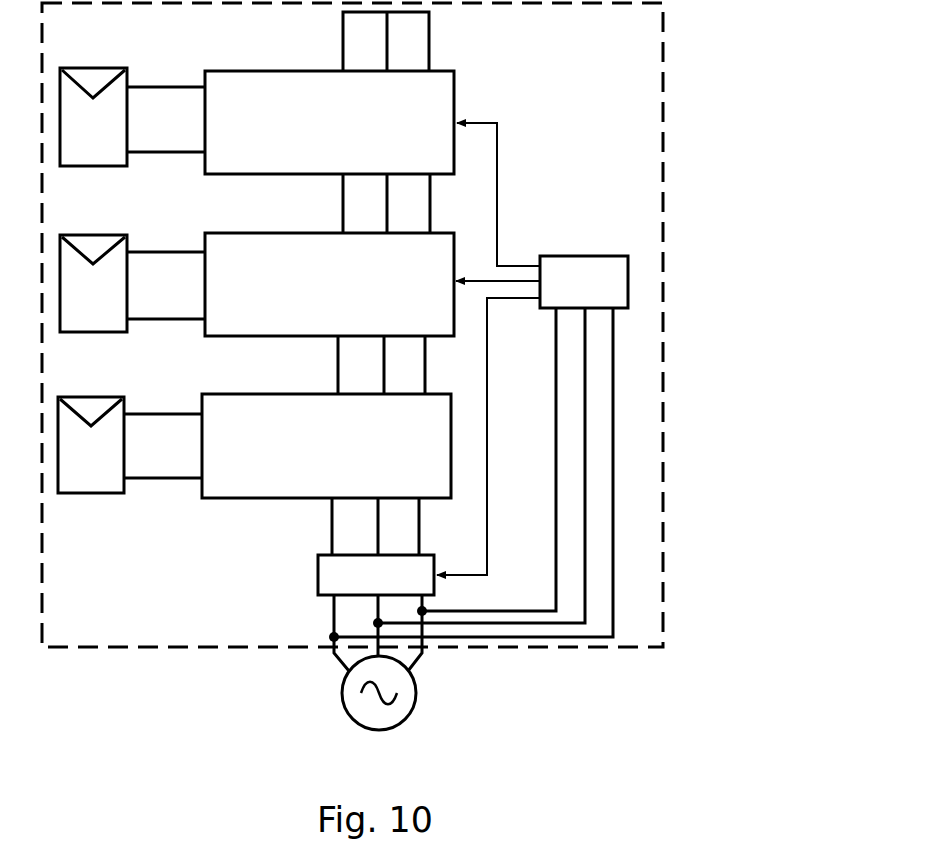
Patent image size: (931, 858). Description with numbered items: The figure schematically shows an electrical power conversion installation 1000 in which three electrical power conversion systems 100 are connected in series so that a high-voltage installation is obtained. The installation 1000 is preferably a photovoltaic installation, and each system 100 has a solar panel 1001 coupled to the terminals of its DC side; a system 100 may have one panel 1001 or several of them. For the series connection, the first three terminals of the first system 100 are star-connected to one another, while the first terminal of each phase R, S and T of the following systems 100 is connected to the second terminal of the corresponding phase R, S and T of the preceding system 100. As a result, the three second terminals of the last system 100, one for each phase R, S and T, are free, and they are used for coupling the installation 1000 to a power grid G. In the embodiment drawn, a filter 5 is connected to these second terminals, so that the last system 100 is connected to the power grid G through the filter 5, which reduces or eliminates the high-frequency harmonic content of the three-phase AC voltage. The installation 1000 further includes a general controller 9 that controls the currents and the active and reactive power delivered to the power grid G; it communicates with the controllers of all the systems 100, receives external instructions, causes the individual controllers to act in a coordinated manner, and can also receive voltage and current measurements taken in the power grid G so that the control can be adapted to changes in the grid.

The electrical power conversion installation 1000 is at (665, 141).
The solar panel 1001 is at (88, 140).
The electrical power conversion system 100 is at (372, 132).
The general controller 9 is at (575, 295).
The filter 5 is at (338, 578).
The phase R is at (341, 208).
The phase S is at (380, 380).
The phase T is at (420, 542).
The power grid G is at (405, 695).